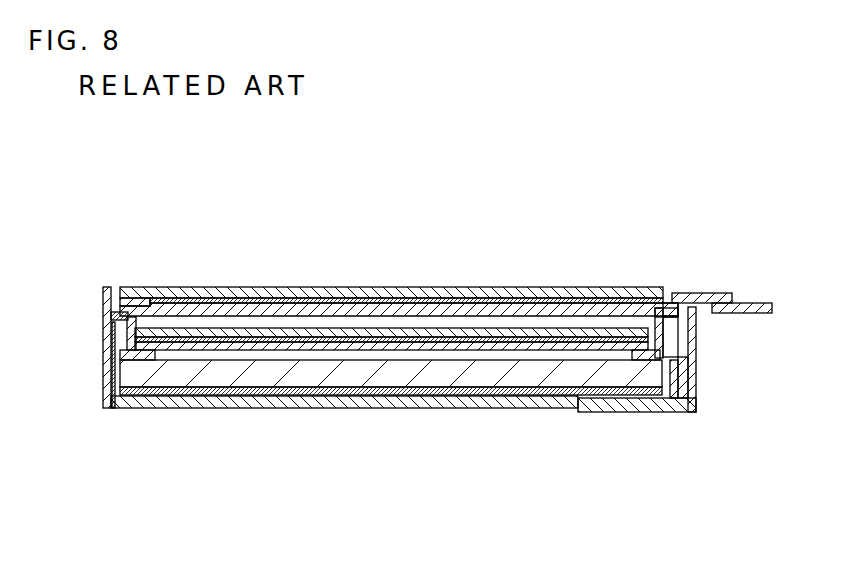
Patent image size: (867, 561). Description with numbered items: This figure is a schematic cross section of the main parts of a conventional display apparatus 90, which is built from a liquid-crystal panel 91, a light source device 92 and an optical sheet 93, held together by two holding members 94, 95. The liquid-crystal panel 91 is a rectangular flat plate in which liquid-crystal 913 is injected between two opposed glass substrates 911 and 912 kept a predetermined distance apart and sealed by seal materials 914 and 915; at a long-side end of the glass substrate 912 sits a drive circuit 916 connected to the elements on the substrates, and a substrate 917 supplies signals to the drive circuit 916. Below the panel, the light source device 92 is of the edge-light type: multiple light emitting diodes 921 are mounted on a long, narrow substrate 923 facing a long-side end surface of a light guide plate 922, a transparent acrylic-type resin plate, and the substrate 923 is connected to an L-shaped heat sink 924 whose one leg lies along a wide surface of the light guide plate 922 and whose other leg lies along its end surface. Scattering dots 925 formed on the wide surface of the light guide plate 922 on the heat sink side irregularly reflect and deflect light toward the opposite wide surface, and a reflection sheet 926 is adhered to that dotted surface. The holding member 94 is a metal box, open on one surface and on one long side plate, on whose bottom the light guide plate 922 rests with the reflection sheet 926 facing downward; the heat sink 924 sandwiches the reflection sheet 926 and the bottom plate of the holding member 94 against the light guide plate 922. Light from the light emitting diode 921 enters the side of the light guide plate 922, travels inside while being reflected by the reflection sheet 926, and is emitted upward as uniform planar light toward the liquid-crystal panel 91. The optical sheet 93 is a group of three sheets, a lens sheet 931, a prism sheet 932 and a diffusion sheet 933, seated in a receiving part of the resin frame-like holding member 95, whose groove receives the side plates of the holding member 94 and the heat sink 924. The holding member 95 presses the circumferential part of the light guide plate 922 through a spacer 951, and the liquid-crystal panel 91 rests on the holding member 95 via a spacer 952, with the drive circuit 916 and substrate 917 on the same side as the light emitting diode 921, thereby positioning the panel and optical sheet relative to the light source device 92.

The display apparatus 90 is at (181, 205).
The liquid-crystal panel 91 is at (119, 276).
The glass substrate 911 is at (230, 287).
The glass substrate 912 is at (305, 307).
The liquid-crystal 913 is at (265, 298).
The seal material 914 is at (668, 303).
The seal material 915 is at (143, 298).
The drive circuit 916 is at (713, 293).
The substrate 917 is at (752, 303).
The light source device 92 is at (575, 324).
The light emitting diode 921 is at (668, 410).
The light guide plate 922 is at (312, 380).
The substrate 923 is at (673, 412).
The heat sink 924 is at (688, 413).
The scattering dots 925 is at (165, 393).
The reflection sheet 926 is at (410, 393).
The optical sheet 93 is at (391, 257).
The lens sheet 931 is at (415, 333).
The prism sheet 932 is at (468, 340).
The diffusion sheet 933 is at (378, 207).
The holding member 94 is at (127, 408).
The holding member 95 is at (118, 325).
The spacer 951 is at (155, 358).
The spacer 952 is at (112, 314).